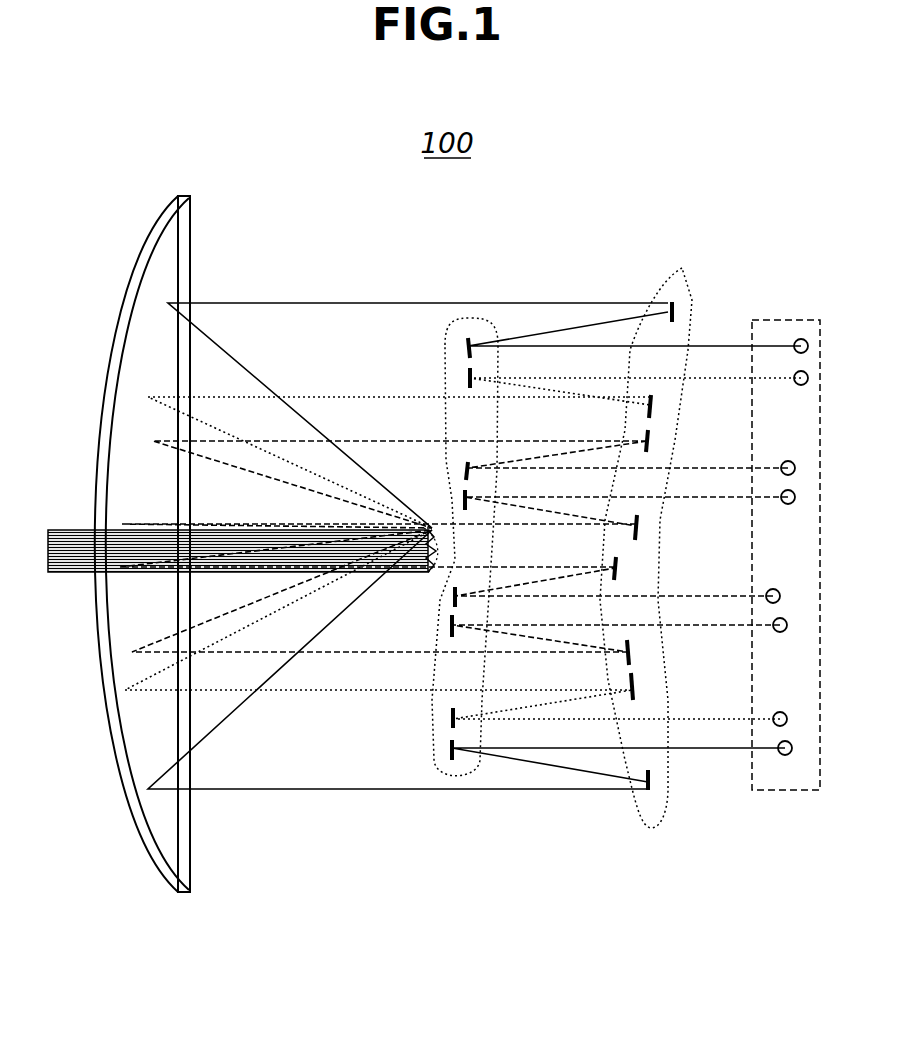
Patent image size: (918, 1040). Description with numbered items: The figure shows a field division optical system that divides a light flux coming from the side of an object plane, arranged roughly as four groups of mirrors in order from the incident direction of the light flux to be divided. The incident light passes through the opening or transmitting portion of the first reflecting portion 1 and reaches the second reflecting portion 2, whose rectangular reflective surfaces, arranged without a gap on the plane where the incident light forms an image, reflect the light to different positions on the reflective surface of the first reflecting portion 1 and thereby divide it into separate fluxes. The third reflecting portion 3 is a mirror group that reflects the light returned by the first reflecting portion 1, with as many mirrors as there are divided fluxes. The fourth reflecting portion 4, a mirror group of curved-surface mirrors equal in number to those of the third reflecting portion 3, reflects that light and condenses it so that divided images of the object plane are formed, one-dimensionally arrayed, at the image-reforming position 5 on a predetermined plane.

The first reflecting portion 1 is at (148, 258).
The second reflecting portion 2 is at (432, 525).
The third reflecting portion 3 is at (684, 268).
The fourth reflecting portion 4 is at (492, 320).
The image-reforming position 5 is at (796, 320).